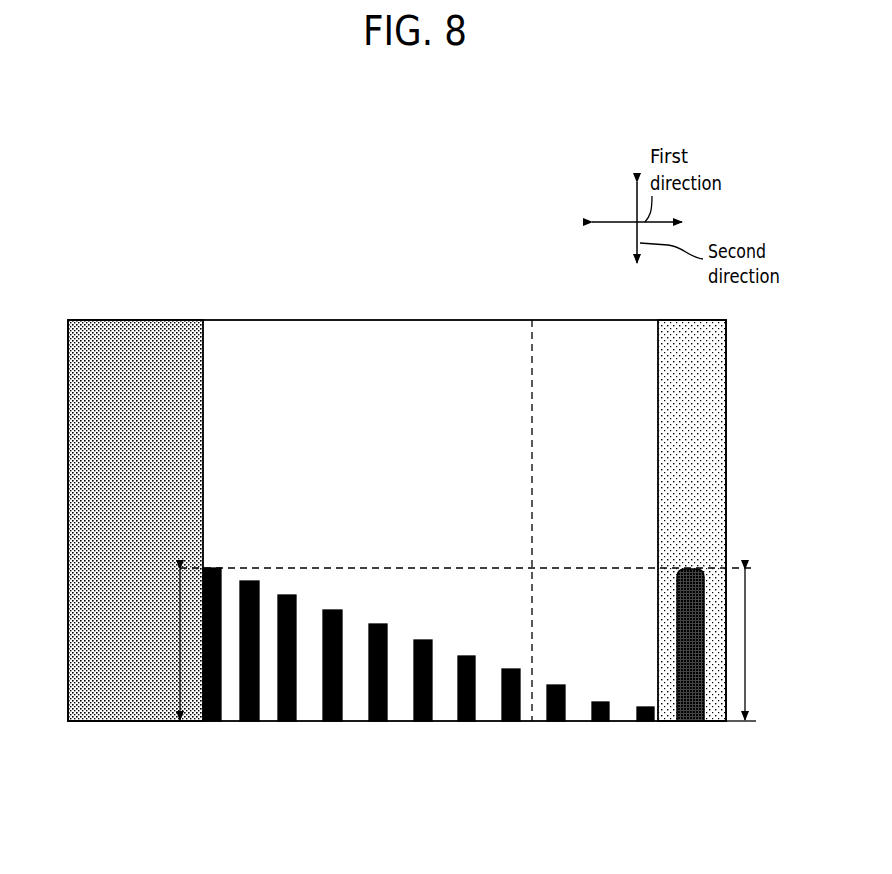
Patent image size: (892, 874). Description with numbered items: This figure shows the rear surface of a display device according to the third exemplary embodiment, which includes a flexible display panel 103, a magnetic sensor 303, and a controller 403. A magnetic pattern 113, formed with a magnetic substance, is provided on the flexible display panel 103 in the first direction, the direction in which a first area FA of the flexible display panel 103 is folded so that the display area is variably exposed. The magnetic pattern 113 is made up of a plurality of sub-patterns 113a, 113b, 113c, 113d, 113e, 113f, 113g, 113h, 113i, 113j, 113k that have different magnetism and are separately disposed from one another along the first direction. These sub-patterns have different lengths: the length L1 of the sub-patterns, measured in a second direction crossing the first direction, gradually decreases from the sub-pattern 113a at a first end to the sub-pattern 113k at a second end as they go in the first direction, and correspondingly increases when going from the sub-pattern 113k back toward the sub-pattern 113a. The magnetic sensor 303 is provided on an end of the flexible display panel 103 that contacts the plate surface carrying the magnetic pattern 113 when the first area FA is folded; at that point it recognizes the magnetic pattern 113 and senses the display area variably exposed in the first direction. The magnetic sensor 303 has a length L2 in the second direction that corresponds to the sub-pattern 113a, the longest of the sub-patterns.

The flexible display panel 103 is at (434, 343).
The first area FA is at (532, 343).
The controller 403 is at (110, 697).
The magnetic sensor 303 is at (690, 723).
The magnetic pattern 113 is at (430, 709).
The sub-pattern 113a is at (212, 722).
The sub-pattern 113b is at (248, 722).
The sub-pattern 113c is at (287, 722).
The sub-pattern 113d is at (332, 722).
The sub-pattern 113e is at (378, 722).
The sub-pattern 113f is at (423, 722).
The sub-pattern 113g is at (466, 722).
The sub-pattern 113h is at (511, 722).
The sub-pattern 113i is at (556, 722).
The sub-pattern 113j is at (600, 722).
The sub-pattern 113k is at (648, 753).
The length of the sub-patterns L1 is at (167, 644).
The length of the magnetic sensor L2 is at (758, 644).